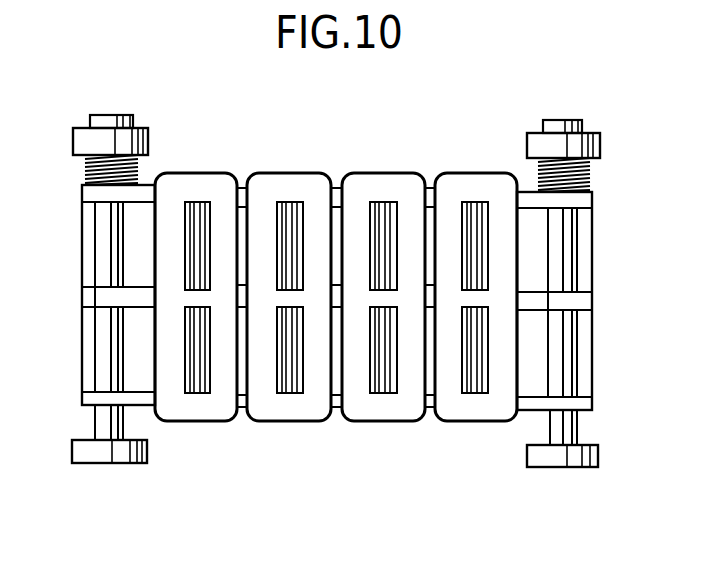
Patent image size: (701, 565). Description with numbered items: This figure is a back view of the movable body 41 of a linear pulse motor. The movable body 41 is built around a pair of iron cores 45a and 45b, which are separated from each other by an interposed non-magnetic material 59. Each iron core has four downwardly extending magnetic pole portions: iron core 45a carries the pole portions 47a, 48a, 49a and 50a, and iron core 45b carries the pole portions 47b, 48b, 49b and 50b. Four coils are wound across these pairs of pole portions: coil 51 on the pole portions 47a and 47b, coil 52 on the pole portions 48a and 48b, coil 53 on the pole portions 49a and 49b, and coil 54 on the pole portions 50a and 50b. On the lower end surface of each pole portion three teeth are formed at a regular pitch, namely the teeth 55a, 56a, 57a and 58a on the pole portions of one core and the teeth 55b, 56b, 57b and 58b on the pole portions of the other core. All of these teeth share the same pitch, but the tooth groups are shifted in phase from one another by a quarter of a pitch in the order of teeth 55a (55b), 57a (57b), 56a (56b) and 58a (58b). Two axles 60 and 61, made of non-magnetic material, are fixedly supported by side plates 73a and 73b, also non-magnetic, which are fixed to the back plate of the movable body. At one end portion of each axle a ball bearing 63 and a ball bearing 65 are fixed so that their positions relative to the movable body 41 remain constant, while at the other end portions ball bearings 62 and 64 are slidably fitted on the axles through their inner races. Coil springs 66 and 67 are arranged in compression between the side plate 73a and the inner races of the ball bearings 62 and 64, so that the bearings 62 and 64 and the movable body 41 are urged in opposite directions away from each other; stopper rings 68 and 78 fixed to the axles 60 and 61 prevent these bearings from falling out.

The movable body 41 is at (506, 71).
The iron core 45a is at (168, 112).
The iron core 45b is at (155, 474).
The magnetic pole portion 47a is at (181, 380).
The magnetic pole portion 47b is at (187, 238).
The magnetic pole portion 48a is at (275, 380).
The magnetic pole portion 48b is at (277, 240).
The magnetic pole portion 49a is at (368, 380).
The magnetic pole portion 49b is at (368, 240).
The magnetic pole portion 50a is at (462, 380).
The magnetic pole portion 50b is at (460, 240).
The coil 51 is at (197, 178).
The coil 52 is at (286, 178).
The coil 53 is at (381, 178).
The coil 54 is at (470, 178).
The teeth 55a is at (197, 393).
The teeth 55b is at (208, 202).
The teeth 56a is at (290, 393).
The teeth 56b is at (300, 202).
The teeth 57a is at (384, 393).
The teeth 57b is at (394, 202).
The teeth 58a is at (477, 393).
The teeth 58b is at (480, 202).
The non-magnetic material 59 is at (582, 303).
The axle 60 is at (100, 318).
The axle 61 is at (565, 370).
The ball bearing 62 is at (85, 140).
The ball bearing 63 is at (80, 447).
The ball bearing 64 is at (582, 150).
The ball bearing 65 is at (575, 455).
The coil spring 66 is at (85, 168).
The coil spring 67 is at (585, 175).
The stopper ring 68 is at (90, 124).
The side plate 73a is at (90, 192).
The side plate 73b is at (100, 398).
The stopper ring 78 is at (587, 130).